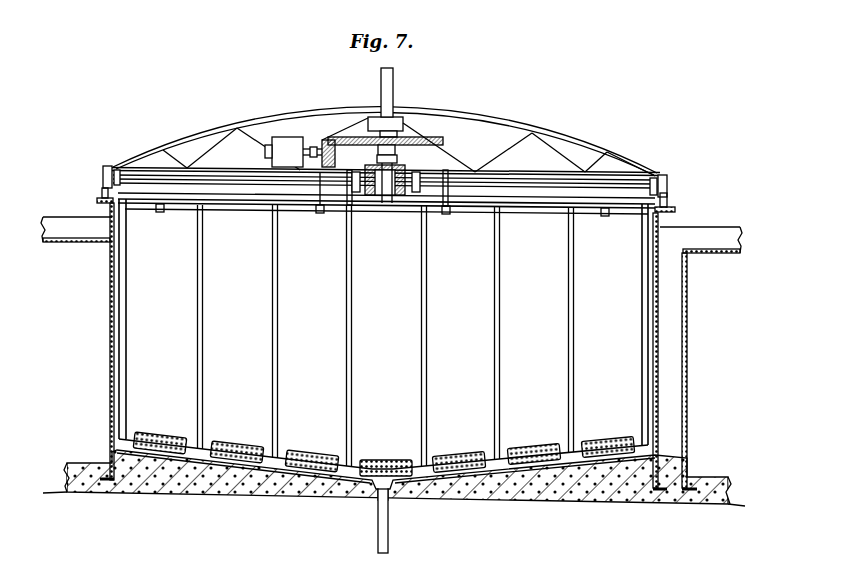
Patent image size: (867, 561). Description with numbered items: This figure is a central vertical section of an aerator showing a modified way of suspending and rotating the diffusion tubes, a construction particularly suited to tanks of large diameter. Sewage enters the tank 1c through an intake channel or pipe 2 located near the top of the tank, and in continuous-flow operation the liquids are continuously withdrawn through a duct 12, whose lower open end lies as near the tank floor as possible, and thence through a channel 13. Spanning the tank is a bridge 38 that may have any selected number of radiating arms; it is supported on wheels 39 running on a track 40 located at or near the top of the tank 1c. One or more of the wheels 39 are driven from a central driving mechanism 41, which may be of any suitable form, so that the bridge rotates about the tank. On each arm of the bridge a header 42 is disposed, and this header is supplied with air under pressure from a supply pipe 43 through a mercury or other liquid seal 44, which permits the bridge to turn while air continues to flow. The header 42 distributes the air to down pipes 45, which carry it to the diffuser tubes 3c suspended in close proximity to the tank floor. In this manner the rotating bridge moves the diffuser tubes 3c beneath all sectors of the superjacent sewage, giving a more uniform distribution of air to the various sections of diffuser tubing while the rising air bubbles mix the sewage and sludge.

The tank 1c is at (104, 294).
The intake channel or pipe 2 is at (71, 241).
The diffuser tubes 3c is at (163, 441).
The duct 12 is at (688, 368).
The channel 13 is at (712, 247).
The bridge 38 is at (271, 117).
The wheels 39 is at (103, 180).
The track 40 is at (98, 200).
The central driving mechanism 41 is at (426, 142).
The header 42 is at (478, 204).
The supply pipe 43 is at (394, 90).
The liquid seal 44 is at (406, 127).
The down pipes 45 is at (127, 328).